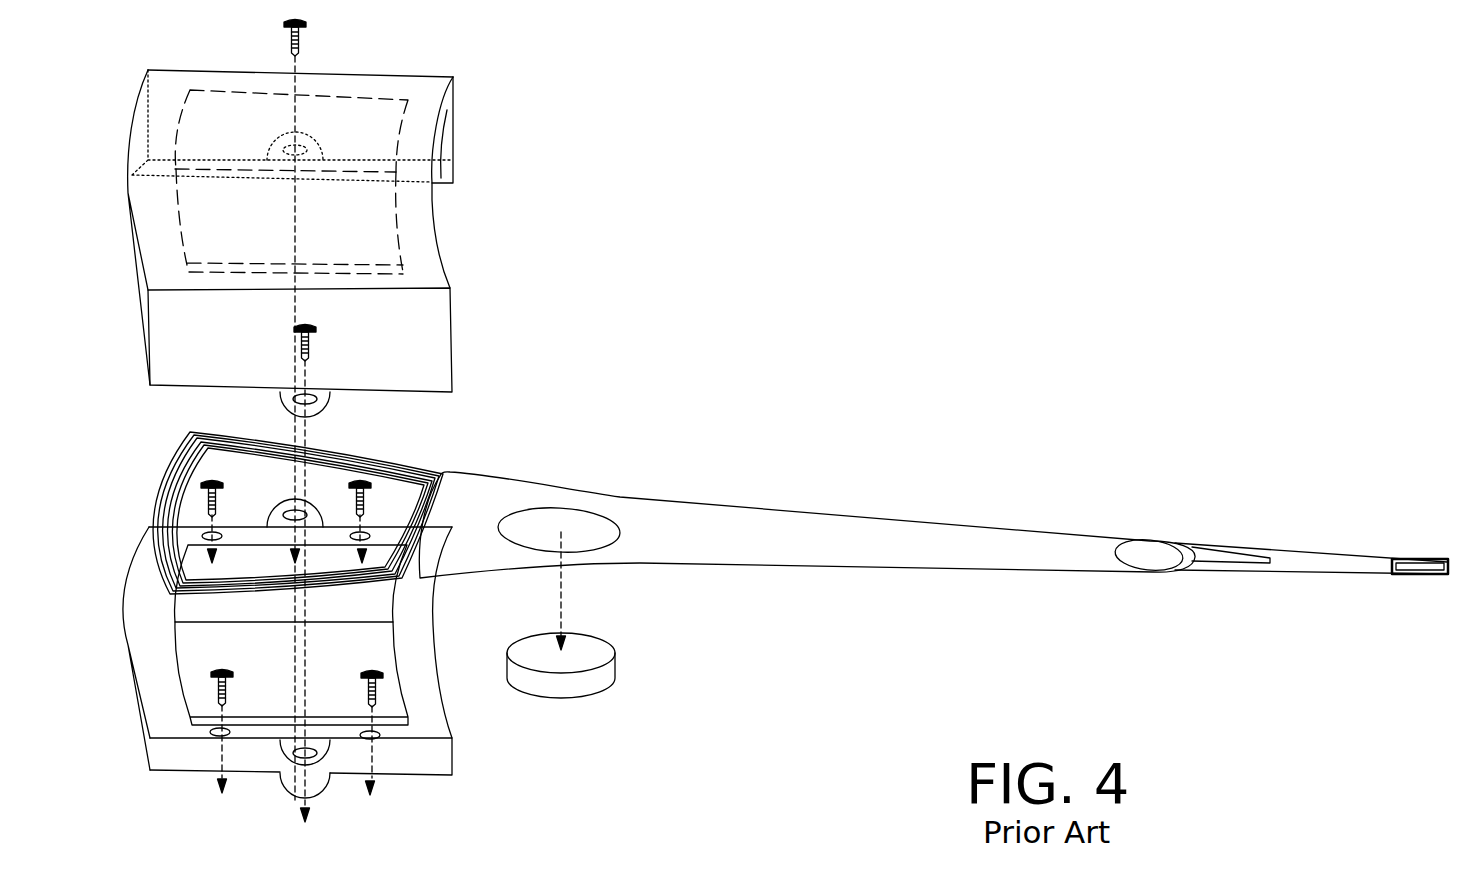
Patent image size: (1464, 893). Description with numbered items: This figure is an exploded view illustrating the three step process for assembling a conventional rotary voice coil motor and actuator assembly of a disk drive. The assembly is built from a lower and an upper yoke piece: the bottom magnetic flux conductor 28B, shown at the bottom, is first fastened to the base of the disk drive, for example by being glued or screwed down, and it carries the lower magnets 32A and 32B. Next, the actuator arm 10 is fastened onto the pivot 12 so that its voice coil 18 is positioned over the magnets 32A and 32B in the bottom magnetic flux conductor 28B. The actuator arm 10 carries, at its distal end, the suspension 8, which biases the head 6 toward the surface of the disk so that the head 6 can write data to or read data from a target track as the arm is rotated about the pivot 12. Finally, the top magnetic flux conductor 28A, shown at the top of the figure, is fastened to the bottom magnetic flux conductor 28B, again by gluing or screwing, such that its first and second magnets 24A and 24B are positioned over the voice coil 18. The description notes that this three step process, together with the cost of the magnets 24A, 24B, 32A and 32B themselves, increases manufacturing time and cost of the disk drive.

The head 6 is at (1419, 560).
The suspension 8 is at (1316, 553).
The actuator arm 10 is at (822, 517).
The pivot 12 is at (617, 666).
The voice coil 18 is at (440, 473).
The first magnet 24A is at (380, 134).
The second magnet 24B is at (380, 249).
The top magnetic flux conductor 28A is at (453, 340).
The bottom magnetic flux conductor 28B is at (453, 758).
The second magnet 32A is at (380, 657).
The third magnet 32B is at (380, 619).